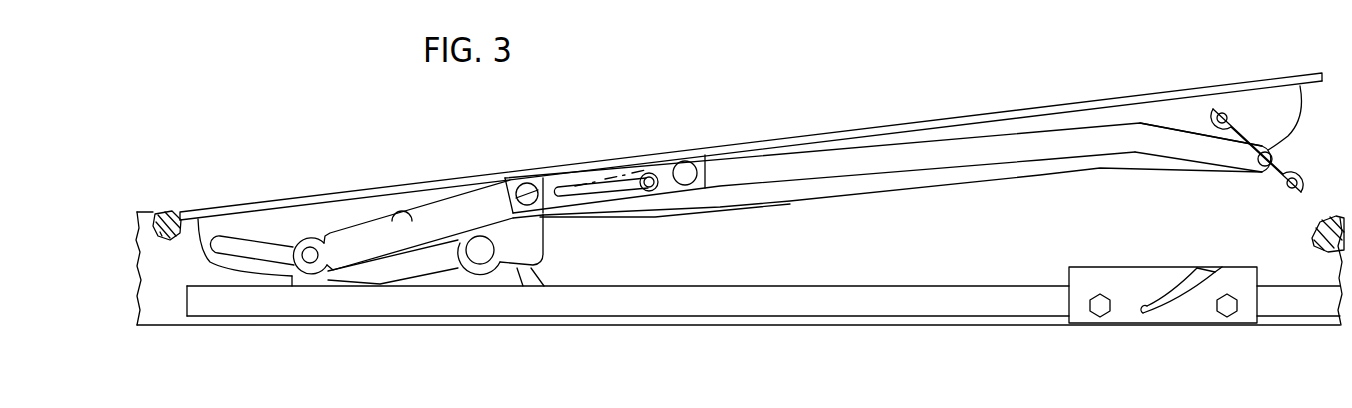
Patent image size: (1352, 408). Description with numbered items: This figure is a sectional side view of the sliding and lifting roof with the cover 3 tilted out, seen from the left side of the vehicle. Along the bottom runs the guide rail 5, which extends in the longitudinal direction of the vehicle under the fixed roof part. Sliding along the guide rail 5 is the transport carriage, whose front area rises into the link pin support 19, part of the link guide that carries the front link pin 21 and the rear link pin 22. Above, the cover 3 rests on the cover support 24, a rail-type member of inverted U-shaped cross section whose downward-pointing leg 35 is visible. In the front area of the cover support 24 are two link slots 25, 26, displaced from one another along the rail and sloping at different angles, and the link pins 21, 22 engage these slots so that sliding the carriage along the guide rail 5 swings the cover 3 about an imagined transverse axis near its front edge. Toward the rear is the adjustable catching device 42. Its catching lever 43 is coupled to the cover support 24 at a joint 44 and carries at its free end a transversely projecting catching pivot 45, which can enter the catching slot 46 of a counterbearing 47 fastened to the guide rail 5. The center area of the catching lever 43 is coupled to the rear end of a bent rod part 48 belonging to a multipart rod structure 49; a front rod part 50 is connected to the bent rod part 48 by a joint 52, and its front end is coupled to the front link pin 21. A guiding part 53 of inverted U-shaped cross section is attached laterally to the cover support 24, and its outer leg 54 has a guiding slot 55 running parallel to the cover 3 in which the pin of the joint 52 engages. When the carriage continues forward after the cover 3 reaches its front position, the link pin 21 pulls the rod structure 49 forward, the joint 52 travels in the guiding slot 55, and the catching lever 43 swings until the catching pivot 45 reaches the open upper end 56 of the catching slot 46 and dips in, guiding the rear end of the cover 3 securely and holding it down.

The cover 3 is at (936, 116).
The guide rail 5 is at (834, 300).
The link pin support 19 is at (418, 276).
The link pin 21 is at (312, 264).
The link pin 22 is at (483, 262).
The cover support 24 is at (997, 130).
The link slot 25 is at (251, 248).
The link slot 26 is at (404, 216).
The leg 35 is at (820, 190).
The catching device 42 is at (1220, 176).
The catching lever 43 is at (1246, 130).
The joint 44 is at (1222, 115).
The catching pivot 45 is at (1298, 183).
The catching slot 46 is at (1170, 314).
The counterbearing 47 is at (1095, 292).
The bent rod part 48 is at (858, 162).
The rod structure 49 is at (621, 219).
The front rod part 50 is at (366, 246).
The joint 52 is at (646, 180).
The guiding part 53 is at (546, 188).
The outer leg 54 is at (666, 178).
The guiding slot 55 is at (585, 190).
The open upper end 56 is at (1208, 268).